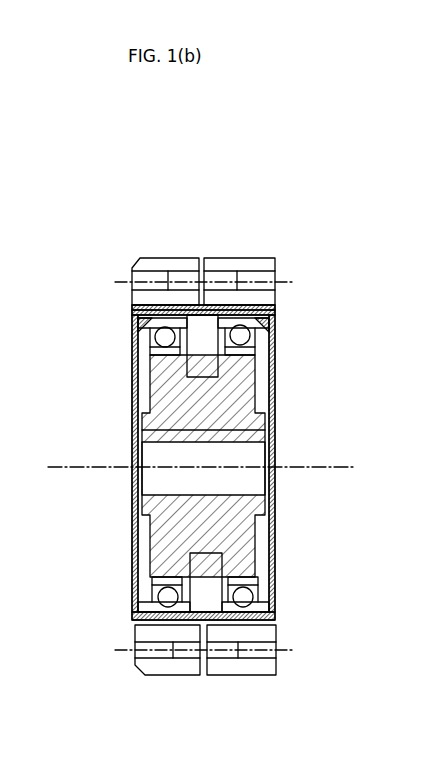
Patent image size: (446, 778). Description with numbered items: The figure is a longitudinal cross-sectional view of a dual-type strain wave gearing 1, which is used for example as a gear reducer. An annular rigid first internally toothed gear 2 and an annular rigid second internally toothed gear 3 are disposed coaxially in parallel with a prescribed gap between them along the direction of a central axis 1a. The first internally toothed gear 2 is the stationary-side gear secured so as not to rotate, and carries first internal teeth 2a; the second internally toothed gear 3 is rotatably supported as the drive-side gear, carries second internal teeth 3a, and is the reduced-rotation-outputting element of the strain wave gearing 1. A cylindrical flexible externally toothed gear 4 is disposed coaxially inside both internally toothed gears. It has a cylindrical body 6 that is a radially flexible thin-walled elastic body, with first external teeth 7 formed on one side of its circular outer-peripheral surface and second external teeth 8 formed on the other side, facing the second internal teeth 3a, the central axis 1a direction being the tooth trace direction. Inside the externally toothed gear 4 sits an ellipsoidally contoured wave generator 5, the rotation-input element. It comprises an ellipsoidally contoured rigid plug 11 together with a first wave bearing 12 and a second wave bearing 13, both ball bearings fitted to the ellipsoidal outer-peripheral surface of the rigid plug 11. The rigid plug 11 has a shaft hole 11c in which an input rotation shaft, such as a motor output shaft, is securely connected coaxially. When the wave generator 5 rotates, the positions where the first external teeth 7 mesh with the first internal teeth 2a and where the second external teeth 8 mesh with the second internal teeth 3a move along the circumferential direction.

The strain wave gearing 1 is at (354, 226).
The central axis 1a is at (340, 468).
The first internally toothed gear 2 is at (238, 288).
The first internal teeth 2a is at (272, 354).
The second internally toothed gear 3 is at (150, 277).
The second internal teeth 3a is at (142, 323).
The externally toothed gear 4 is at (363, 258).
The wave generator 5 is at (283, 430).
The cylindrical body 6 is at (258, 323).
The first external teeth 7 is at (238, 308).
The second external teeth 8 is at (205, 303).
The rigid plug 11 is at (280, 540).
The shaft hole 11c is at (158, 480).
The first wave bearing 12 is at (230, 360).
The second wave bearing 13 is at (160, 340).